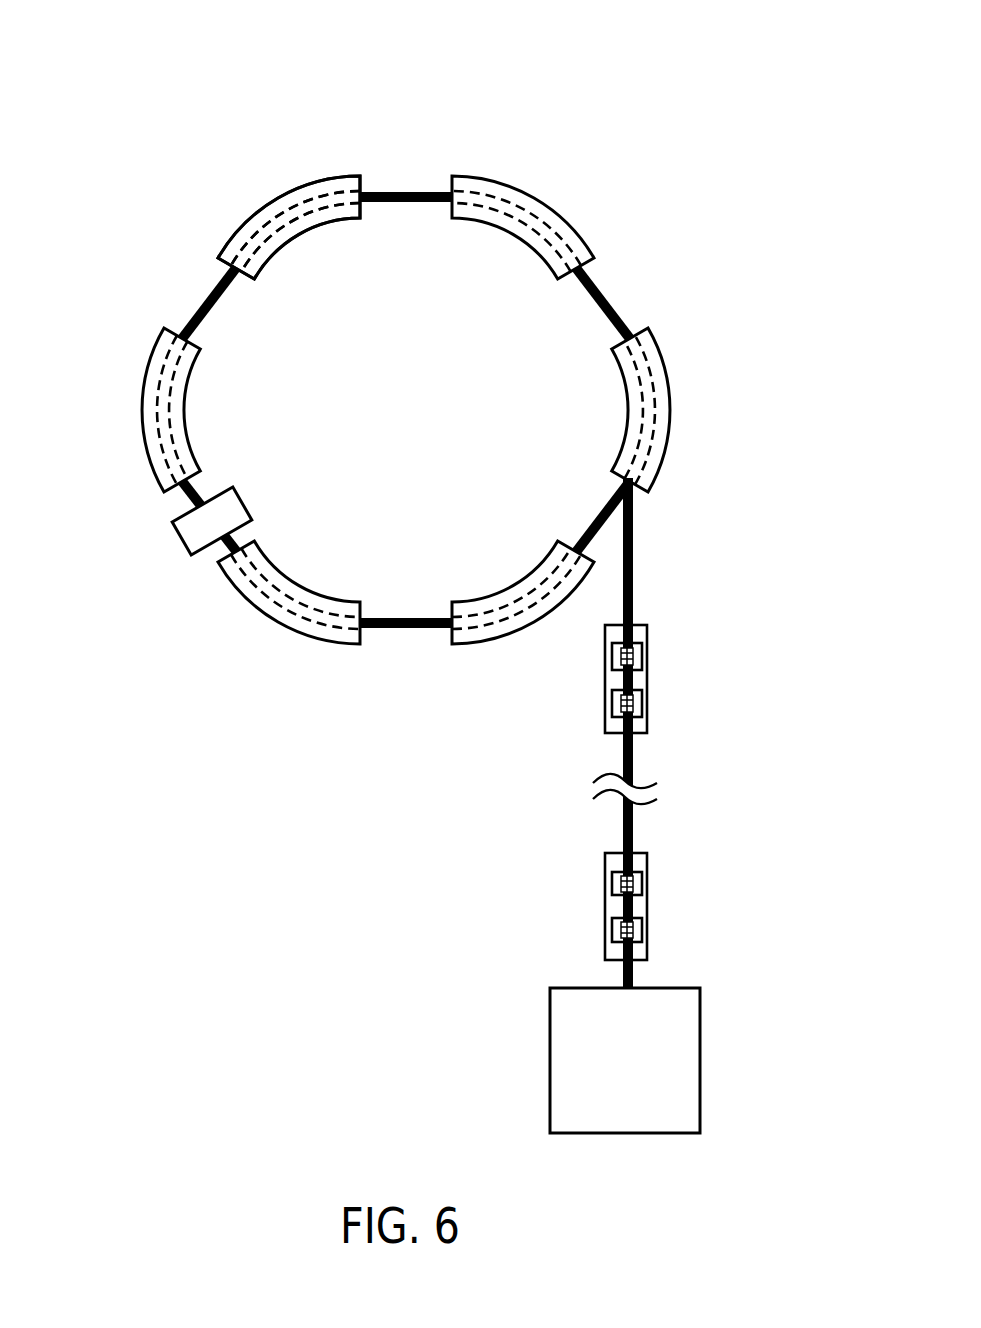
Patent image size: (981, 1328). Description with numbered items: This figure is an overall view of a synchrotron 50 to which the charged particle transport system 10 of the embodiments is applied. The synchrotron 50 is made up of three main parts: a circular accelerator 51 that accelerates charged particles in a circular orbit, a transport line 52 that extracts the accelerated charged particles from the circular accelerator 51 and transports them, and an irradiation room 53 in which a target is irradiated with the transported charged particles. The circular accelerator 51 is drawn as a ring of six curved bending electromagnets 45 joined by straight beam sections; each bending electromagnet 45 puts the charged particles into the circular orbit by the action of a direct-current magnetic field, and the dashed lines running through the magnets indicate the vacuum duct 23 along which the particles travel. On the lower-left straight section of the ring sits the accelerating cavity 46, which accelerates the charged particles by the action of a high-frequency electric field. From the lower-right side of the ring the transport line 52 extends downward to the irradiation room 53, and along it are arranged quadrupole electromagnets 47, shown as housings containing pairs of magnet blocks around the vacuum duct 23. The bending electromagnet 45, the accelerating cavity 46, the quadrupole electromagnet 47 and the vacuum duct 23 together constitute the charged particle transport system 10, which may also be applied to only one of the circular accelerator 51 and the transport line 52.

The synchrotron 50 is at (105, 87).
The circular accelerator 51 is at (103, 178).
The transport line 52 is at (733, 556).
The irradiation room 53 is at (550, 1060).
The charged particle transport system 10 is at (365, 504).
The vacuum duct 23 is at (273, 216).
The bending electromagnet 45 is at (322, 180).
The accelerating cavity 46 is at (247, 502).
The quadrupole electromagnet 47 is at (613, 883).